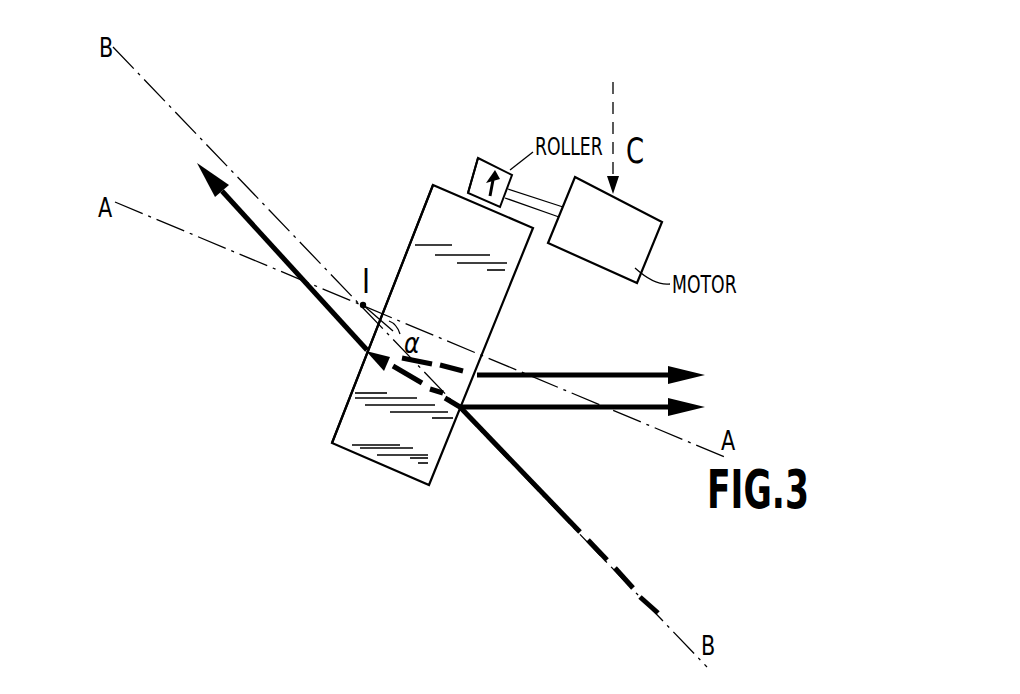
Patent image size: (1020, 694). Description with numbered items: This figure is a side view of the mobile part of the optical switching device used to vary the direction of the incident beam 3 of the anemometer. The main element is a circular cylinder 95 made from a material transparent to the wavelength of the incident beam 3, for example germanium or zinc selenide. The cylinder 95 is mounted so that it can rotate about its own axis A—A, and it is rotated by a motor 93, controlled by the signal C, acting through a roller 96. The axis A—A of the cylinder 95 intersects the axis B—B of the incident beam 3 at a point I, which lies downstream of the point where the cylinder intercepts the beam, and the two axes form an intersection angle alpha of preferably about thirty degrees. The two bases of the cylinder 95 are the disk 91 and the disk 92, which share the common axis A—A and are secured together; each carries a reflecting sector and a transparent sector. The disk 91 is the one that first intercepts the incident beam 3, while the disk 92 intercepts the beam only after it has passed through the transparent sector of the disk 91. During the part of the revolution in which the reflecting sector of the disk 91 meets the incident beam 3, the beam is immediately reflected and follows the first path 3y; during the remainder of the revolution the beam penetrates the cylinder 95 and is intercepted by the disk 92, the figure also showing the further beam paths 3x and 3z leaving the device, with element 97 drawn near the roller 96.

The incident beam 3 is at (540, 497).
The beam path 3x is at (577, 373).
The first path 3y is at (578, 412).
The beam path 3z is at (260, 237).
The disk 91 is at (500, 310).
The disk 92 is at (407, 247).
The motor 93 is at (640, 236).
The circular cylinder 95 is at (445, 220).
The roller 96 is at (470, 173).
The plate edge contacting roller 97 is at (467, 187).